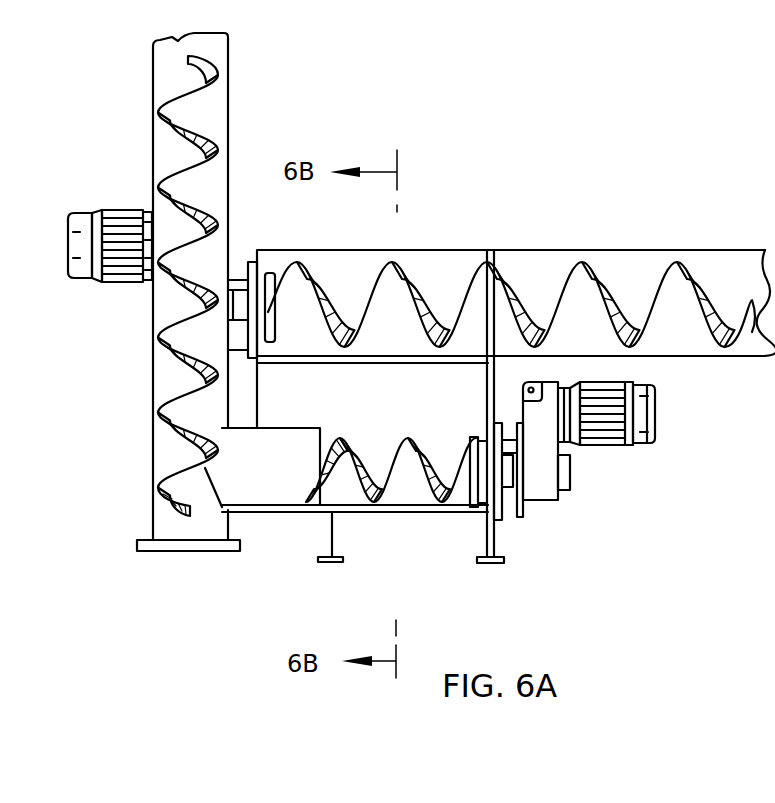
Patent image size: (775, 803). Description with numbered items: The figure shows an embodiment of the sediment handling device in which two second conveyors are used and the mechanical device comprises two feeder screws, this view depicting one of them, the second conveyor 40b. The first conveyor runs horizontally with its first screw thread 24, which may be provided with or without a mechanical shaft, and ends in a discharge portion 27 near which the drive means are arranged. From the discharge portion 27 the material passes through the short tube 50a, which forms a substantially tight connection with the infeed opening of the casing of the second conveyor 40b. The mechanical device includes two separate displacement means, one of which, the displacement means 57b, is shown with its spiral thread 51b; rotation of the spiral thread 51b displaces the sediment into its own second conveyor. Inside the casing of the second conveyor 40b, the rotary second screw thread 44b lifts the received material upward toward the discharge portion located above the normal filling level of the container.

The second conveyor 40b is at (228, 77).
The second screw thread 44b is at (222, 157).
The first screw thread 24 is at (405, 273).
The discharge portion 27 is at (305, 250).
The short tube 50a is at (290, 423).
The spiral thread 51b is at (443, 500).
The displacement means 57b is at (378, 513).